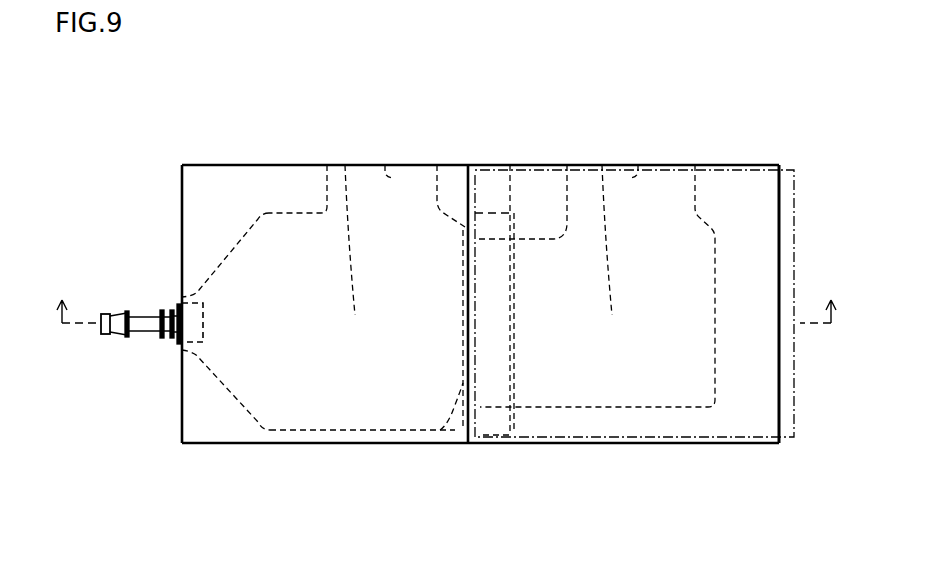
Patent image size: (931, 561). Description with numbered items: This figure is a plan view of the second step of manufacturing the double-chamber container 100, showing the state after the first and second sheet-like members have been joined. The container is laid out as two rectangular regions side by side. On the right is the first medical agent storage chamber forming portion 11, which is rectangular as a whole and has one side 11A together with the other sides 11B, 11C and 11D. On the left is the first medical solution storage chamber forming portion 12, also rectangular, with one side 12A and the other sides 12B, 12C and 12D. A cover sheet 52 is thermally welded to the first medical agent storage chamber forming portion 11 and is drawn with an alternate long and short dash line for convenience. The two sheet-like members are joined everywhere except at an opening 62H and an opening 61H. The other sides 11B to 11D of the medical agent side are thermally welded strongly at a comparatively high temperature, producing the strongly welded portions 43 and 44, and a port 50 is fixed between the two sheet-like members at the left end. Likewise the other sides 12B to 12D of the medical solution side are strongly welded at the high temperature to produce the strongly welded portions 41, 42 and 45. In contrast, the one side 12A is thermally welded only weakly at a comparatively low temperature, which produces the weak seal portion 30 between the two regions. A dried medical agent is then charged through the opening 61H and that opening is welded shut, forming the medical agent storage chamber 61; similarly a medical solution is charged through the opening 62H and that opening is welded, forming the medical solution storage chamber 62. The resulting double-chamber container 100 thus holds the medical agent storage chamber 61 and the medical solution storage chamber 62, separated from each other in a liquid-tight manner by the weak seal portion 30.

The double-chamber container 100 is at (160, 109).
The first medical agent storage chamber forming portion 11 is at (575, 167).
The one side of first medical agent storage chamber forming portion 11A is at (495, 320).
The other side of first medical agent storage chamber forming portion 11B is at (685, 167).
The other side of first medical agent storage chamber forming portion 11C is at (765, 250).
The other side of first medical agent storage chamber forming portion 11D is at (595, 443).
The first medical solution storage chamber forming portion 12 is at (424, 165).
The one side of first medical solution storage chamber forming portion 12A is at (486, 322).
The other side of first medical solution storage chamber forming portion 12B is at (309, 167).
The other side of first medical solution storage chamber forming portion 12C is at (190, 228).
The other side of first medical solution storage chamber forming portion 12D is at (327, 432).
The weak seal portion 30 is at (437, 445).
The strongly welded portion 41 is at (246, 190).
The strongly welded portion 42 is at (224, 433).
The strongly welded portion 43 is at (642, 420).
The strongly welded portion 44 is at (540, 195).
The strongly welded portion 45 is at (458, 190).
The port 50 is at (148, 324).
The cover sheet 52 is at (786, 440).
The medical agent storage chamber 61 is at (602, 165).
The opening 61H is at (638, 165).
The medical solution storage chamber 62 is at (345, 165).
The opening 62H is at (385, 165).